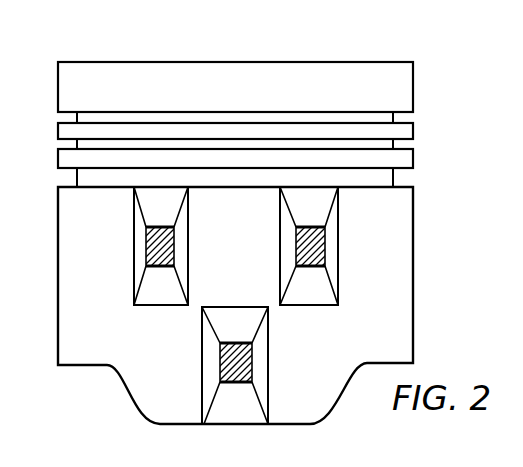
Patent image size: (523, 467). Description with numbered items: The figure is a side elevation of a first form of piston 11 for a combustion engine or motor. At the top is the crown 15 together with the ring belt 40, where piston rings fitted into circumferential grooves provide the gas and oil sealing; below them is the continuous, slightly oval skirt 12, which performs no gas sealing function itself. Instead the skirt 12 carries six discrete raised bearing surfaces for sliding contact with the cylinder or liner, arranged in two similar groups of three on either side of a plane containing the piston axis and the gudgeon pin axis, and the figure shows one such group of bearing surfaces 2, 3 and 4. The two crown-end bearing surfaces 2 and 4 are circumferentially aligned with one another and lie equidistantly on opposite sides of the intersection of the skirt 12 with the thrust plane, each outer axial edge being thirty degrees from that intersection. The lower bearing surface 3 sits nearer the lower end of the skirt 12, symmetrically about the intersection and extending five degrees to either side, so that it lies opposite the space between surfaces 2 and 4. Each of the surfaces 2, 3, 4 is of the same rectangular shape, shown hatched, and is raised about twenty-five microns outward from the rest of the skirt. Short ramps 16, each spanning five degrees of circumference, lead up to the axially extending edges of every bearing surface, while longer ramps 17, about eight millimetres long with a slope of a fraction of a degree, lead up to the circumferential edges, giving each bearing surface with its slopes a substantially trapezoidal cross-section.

The piston 11 is at (441, 130).
The skirt 12 is at (400, 260).
The crown 15 is at (120, 62).
The ring belt 40 is at (352, 85).
The ramps 16 is at (184, 247).
The longer ramps 17 is at (165, 208).
The bearing surface 2 is at (152, 244).
The lower bearing surface 3 is at (240, 360).
The bearing surface 4 is at (304, 243).